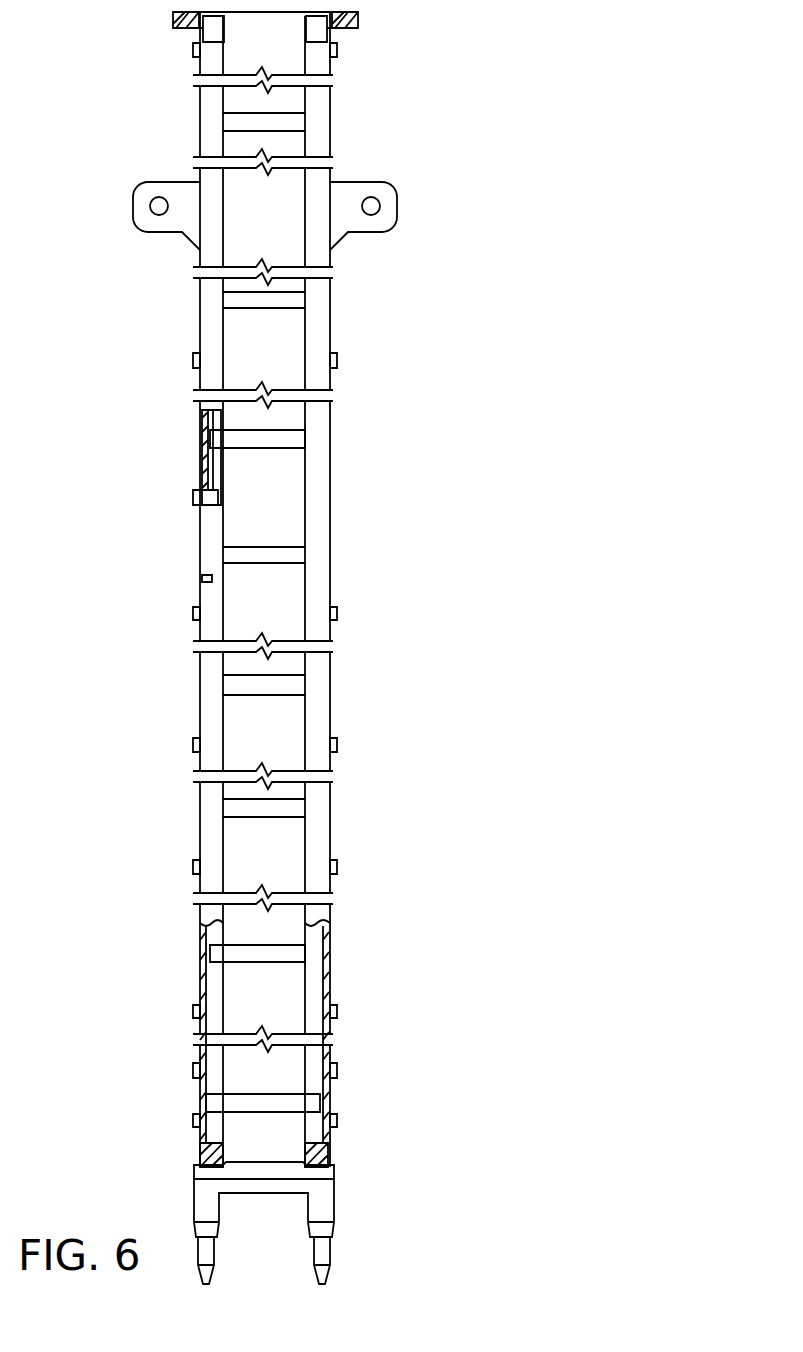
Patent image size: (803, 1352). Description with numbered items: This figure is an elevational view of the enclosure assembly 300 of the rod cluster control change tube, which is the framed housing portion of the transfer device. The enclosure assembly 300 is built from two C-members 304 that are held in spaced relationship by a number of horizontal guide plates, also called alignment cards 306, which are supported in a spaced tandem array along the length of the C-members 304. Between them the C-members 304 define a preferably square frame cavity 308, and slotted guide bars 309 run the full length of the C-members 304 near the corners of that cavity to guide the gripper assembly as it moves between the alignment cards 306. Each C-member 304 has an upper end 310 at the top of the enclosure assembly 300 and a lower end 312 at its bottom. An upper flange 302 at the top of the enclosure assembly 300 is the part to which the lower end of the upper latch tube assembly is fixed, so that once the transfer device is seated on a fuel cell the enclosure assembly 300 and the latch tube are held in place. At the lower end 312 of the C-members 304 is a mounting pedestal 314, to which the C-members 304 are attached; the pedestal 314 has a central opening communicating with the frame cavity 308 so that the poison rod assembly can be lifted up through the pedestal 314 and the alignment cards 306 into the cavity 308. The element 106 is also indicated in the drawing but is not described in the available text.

The enclosure assembly 300 is at (280, 589).
The upper flange 302 is at (358, 22).
The C-member 304 is at (358, 408).
The horizontal guide plate 306 is at (300, 121).
The frame cavity 308 is at (238, 245).
The slotted guide bar 309 is at (198, 457).
The upper end 310 is at (190, 42).
The lower end 312 is at (192, 1168).
The mounting pedestal 314 is at (334, 1203).
The connector bar 106 is at (205, 440).